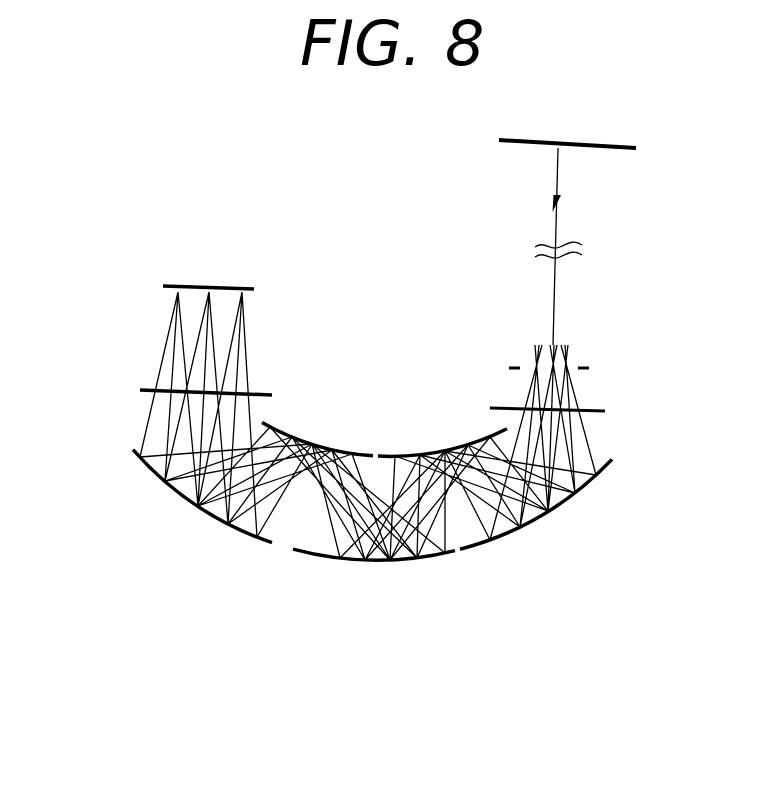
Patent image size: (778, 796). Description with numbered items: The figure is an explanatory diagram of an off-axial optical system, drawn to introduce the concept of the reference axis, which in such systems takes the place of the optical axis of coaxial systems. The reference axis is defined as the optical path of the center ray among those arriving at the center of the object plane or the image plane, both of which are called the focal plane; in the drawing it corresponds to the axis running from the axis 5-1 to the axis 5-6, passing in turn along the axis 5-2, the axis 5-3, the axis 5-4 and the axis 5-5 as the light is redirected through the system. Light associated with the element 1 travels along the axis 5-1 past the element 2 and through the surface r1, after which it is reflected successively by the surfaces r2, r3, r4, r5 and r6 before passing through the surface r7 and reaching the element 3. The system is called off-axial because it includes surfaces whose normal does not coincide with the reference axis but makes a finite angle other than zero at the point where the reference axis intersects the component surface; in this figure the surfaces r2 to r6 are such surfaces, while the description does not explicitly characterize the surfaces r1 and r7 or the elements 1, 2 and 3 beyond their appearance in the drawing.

The light source / object plane 1 is at (603, 147).
The aperture stop 2 is at (590, 369).
The image plane 3 is at (229, 286).
The axis 5-1 is at (553, 313).
The axis 5-2 is at (505, 532).
The axis 5-3 is at (401, 555).
The axis 5-4 is at (296, 514).
The axis 5-5 is at (260, 428).
The axis 5-6 is at (207, 343).
The surface r1 is at (600, 412).
The surface r2 is at (560, 517).
The surface r3 is at (430, 450).
The surface r4 is at (338, 557).
The surface r5 is at (320, 450).
The surface r6 is at (172, 478).
The surface r7 is at (142, 389).